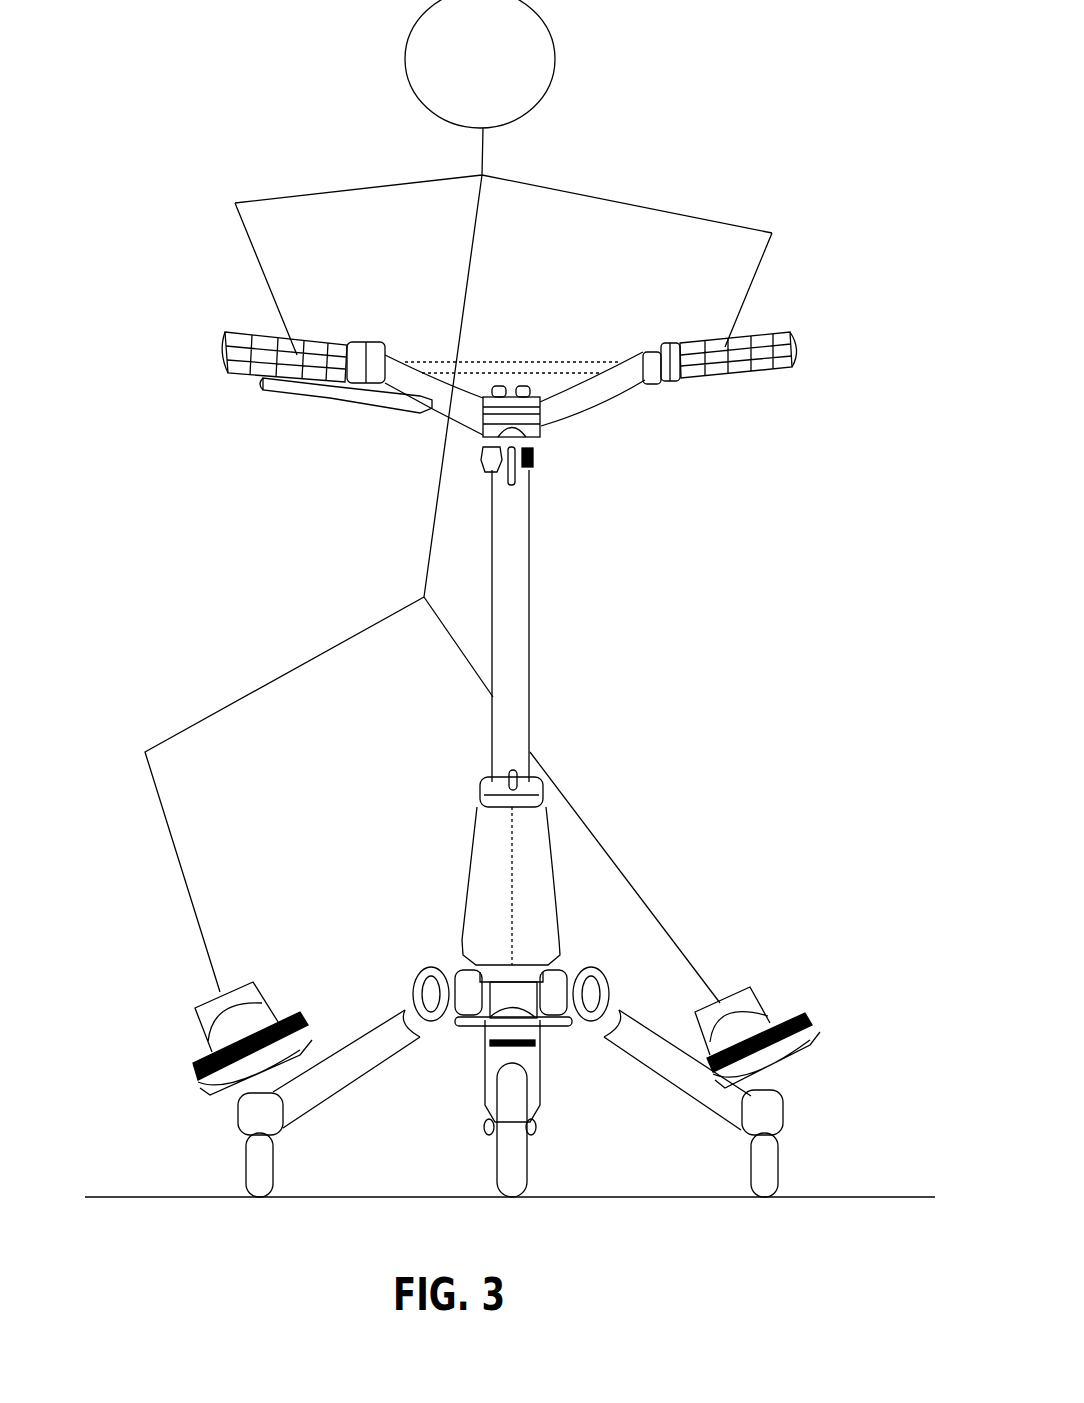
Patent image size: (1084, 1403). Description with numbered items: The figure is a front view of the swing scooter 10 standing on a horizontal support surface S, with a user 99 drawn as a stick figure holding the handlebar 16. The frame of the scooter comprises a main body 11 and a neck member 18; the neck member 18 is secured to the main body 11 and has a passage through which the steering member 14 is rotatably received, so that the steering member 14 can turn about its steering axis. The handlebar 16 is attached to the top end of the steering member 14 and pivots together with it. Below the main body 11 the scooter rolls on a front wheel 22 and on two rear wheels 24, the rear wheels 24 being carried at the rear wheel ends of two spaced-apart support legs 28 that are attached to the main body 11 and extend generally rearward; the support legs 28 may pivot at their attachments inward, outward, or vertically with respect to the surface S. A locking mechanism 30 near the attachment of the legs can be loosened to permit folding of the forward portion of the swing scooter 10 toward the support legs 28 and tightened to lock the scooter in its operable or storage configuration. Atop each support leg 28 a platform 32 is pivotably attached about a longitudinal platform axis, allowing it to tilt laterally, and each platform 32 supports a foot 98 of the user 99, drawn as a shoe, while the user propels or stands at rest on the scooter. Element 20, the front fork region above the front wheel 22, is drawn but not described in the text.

The swing scooter 10 is at (205, 105).
The user 99 is at (555, 83).
The handlebar 16 is at (523, 367).
The steering member 14 is at (510, 568).
The neck member 18 is at (535, 845).
The main body 11 is at (552, 960).
The locking mechanism 30 is at (423, 968).
The support legs 28 is at (357, 1045).
The front fork 20 is at (500, 1037).
The front wheel 22 is at (507, 1178).
The rear wheels 24 is at (257, 1173).
The platforms 32 is at (278, 995).
The foot 98 is at (193, 1017).
The horizontal surface S is at (830, 1198).